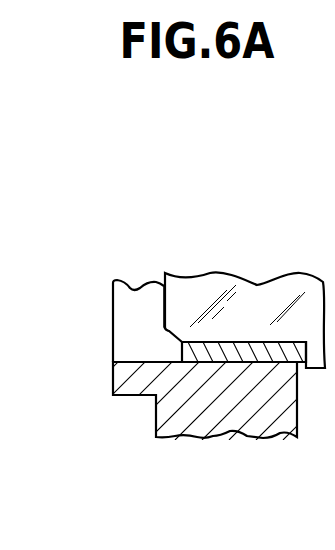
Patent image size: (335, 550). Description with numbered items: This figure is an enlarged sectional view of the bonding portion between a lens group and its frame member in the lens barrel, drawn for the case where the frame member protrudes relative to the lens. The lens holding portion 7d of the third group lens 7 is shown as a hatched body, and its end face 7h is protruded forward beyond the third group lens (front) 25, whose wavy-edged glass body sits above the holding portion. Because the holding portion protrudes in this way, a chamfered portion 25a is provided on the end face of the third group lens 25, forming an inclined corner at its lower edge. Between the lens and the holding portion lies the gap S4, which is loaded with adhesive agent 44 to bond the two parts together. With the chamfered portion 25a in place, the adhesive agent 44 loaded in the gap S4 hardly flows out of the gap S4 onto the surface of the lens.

The third group lens 7 is at (265, 418).
The end face 7h is at (112, 378).
The lens holding portion 7d is at (223, 353).
The third group lens (front) 25 is at (202, 288).
The chamfered portion 25a is at (163, 329).
The adhesive agent 44 is at (104, 340).
The gap S4 is at (193, 355).